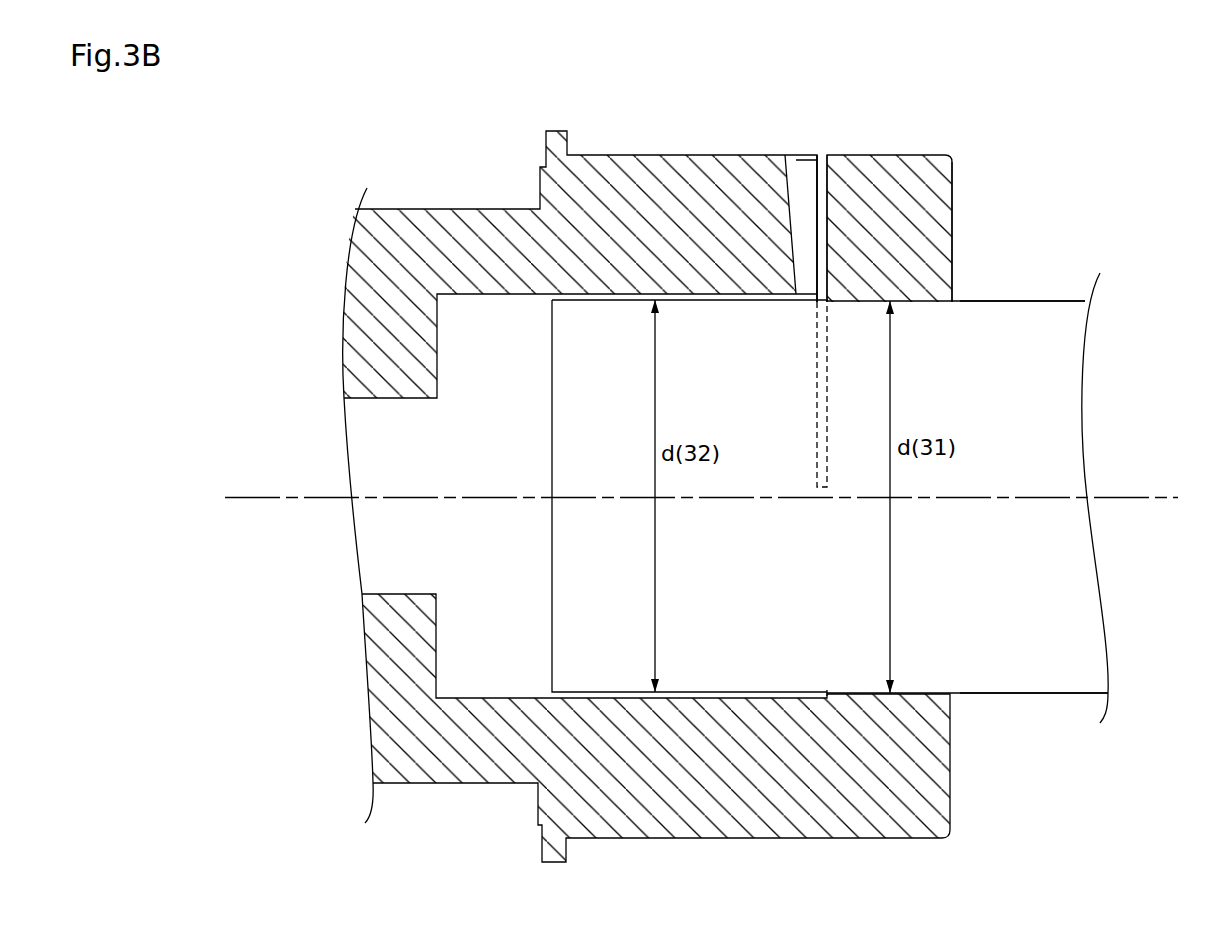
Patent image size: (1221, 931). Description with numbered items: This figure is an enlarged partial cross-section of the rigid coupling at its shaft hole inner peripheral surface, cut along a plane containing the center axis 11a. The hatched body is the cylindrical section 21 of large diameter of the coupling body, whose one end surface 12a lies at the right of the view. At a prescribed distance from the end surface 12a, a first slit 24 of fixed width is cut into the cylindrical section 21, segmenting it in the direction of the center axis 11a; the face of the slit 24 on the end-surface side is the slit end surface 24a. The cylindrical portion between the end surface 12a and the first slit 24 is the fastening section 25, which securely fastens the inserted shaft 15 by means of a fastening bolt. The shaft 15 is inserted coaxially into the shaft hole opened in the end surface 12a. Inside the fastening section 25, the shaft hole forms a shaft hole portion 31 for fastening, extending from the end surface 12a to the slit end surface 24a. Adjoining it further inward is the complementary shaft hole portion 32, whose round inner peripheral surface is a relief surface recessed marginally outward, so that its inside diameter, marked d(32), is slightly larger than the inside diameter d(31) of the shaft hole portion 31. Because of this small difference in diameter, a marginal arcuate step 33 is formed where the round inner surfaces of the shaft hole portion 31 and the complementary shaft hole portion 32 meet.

The cylindrical section of large diameter 21 is at (478, 203).
The first slit 24 is at (822, 146).
The slit end surface 24a is at (827, 175).
The fastening section 25 is at (952, 150).
The one end surface 12a is at (952, 228).
The center axis 11a is at (1143, 498).
The shaft 15 is at (1057, 728).
The shaft hole portion for fastening 31 is at (864, 694).
The complementary shaft hole portion 32 is at (735, 697).
The arcuate step 33 is at (827, 698).